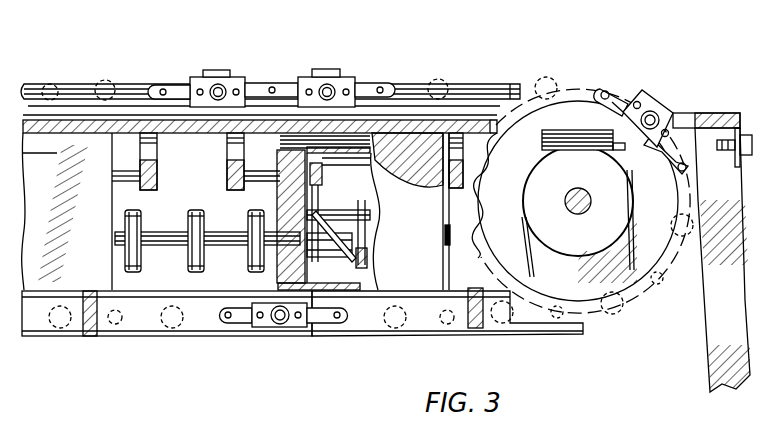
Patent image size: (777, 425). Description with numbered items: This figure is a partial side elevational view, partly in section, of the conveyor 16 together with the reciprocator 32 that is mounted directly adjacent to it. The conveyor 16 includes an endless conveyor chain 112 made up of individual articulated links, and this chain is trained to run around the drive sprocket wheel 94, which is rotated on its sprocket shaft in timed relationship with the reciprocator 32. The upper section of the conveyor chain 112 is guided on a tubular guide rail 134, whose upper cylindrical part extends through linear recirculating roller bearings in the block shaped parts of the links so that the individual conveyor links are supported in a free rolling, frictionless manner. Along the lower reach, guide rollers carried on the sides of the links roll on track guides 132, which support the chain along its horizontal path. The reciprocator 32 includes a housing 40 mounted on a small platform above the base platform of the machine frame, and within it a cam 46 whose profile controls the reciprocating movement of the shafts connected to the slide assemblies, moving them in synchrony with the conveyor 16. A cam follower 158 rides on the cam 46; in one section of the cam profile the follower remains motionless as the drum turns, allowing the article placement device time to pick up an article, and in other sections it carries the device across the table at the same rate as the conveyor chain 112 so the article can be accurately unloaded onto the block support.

The conveyor 16 is at (334, 66).
The conveyor chain 112 is at (369, 76).
The guide rail 134 is at (464, 81).
The cam follower 158 is at (320, 198).
The cam 46 is at (378, 201).
The housing 40 is at (432, 259).
The sprocket wheel 94 is at (643, 293).
The track guide 132 is at (143, 333).
The reciprocator 32 is at (396, 300).